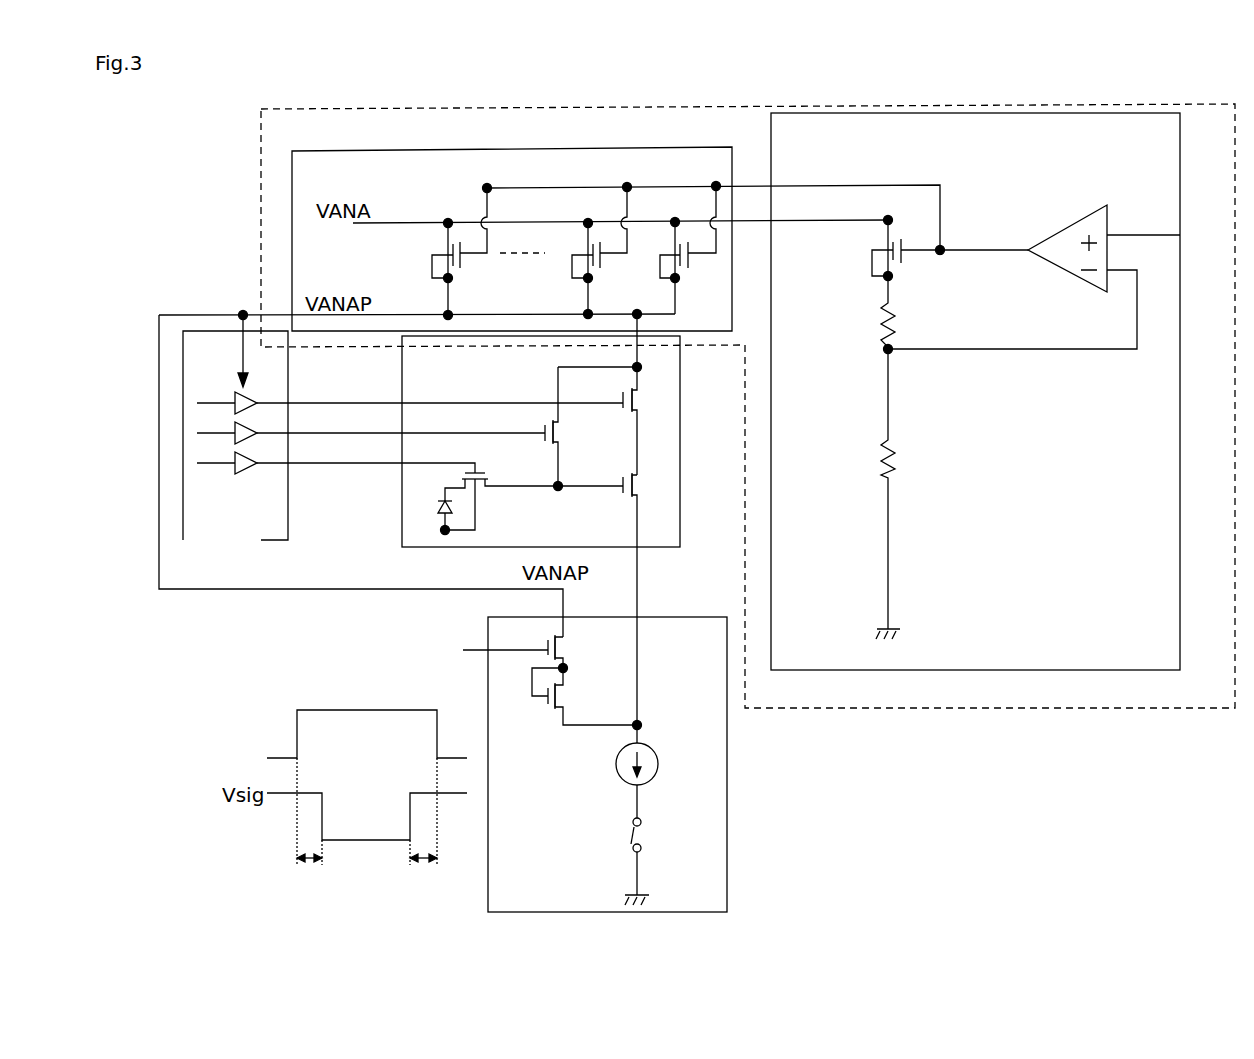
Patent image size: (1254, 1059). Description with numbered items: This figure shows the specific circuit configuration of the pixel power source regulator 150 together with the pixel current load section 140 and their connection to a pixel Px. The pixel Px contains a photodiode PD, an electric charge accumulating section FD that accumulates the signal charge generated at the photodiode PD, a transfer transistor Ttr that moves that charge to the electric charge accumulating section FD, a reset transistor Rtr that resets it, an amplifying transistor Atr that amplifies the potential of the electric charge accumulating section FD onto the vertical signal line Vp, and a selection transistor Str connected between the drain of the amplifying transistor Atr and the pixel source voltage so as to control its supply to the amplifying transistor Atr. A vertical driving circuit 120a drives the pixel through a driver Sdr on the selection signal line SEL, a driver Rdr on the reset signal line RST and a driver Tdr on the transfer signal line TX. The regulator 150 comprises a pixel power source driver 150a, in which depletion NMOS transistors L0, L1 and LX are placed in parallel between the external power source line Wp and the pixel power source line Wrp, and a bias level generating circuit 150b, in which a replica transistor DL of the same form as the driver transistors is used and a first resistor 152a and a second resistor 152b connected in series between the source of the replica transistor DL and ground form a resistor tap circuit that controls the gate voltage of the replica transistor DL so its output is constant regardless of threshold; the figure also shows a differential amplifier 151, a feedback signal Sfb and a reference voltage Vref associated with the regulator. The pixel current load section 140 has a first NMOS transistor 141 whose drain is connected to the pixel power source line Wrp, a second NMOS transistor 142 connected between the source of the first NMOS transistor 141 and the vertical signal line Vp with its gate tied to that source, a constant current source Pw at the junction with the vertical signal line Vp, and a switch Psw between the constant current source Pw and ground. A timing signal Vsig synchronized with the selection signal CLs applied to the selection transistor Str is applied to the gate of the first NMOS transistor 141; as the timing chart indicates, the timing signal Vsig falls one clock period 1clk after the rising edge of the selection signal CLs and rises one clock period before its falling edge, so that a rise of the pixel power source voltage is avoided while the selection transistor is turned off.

The pixel power source regulator 150 is at (860, 710).
The pixel power source driver 150a is at (395, 149).
The bias level generating circuit 150b is at (1060, 663).
The differential amplifier 151 is at (1075, 228).
The first resistor 152a is at (895, 323).
The second resistor 152b is at (903, 451).
The vertical driving circuit 120a is at (278, 541).
The pixel current load section 140 is at (720, 818).
The first NMOS transistor 141 is at (565, 648).
The second NMOS transistor 142 is at (565, 698).
The external power source line Wp is at (395, 223).
The pixel power source line Wrp is at (277, 315).
The depletion NMOS transistor LX is at (459, 251).
The depletion NMOS transistor L1 is at (599, 250).
The depletion NMOS transistor L0 is at (688, 250).
The replica transistor DL is at (886, 245).
The feedback signal Sfb is at (1038, 352).
The reference voltage Vref is at (1143, 222).
The driver Sdr is at (237, 396).
The driver Rdr is at (233, 425).
The driver Tdr is at (235, 454).
The pixel Px is at (672, 530).
The selection signal line SEL is at (440, 390).
The reset signal line RST is at (401, 420).
The transfer signal line TX is at (366, 455).
The transfer transistor Ttr is at (478, 489).
The reset transistor Rtr is at (560, 430).
The selection transistor Str is at (640, 401).
The amplifying transistor Atr is at (640, 488).
The photodiode PD is at (437, 512).
The electric charge accumulating section FD is at (589, 501).
The vertical signal line Vp is at (638, 591).
The timing signal Vsig is at (482, 650).
The constant current source Pw is at (658, 763).
The switch Psw is at (645, 834).
The selection signal CLs is at (344, 741).
The one clock period 1clk is at (367, 873).